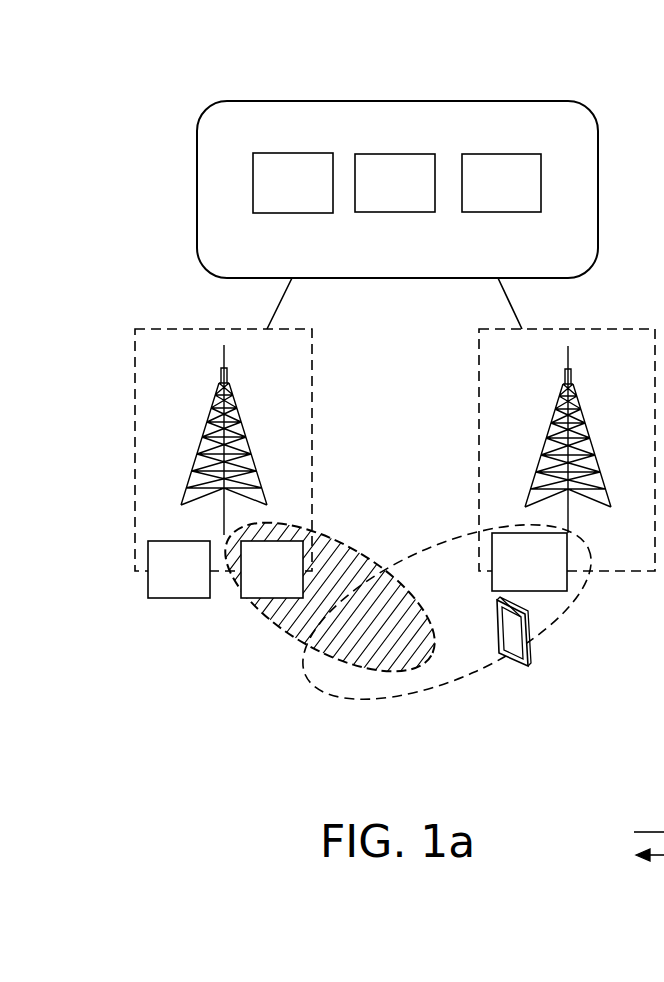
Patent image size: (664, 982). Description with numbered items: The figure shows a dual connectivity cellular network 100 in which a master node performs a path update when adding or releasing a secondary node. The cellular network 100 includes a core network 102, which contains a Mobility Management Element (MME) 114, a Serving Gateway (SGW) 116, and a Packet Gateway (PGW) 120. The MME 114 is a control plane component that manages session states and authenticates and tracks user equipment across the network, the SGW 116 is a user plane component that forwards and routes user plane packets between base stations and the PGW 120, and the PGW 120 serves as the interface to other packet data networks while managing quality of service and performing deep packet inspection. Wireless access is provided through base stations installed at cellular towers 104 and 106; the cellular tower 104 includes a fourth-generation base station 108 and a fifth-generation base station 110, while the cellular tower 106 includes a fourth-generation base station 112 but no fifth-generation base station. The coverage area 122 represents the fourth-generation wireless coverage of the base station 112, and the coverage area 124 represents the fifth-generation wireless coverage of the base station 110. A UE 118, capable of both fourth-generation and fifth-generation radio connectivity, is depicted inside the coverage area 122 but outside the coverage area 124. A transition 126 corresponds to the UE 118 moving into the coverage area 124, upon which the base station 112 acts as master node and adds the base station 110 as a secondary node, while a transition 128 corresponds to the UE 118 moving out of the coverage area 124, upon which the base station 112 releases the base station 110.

The dual connectivity cellular network 100 is at (183, 82).
The core network 102 is at (297, 100).
The cellular tower 104 is at (180, 328).
The cellular tower 106 is at (612, 327).
The 4G base station 108 is at (163, 598).
The 5G base station 110 is at (270, 598).
The 4G base station 112 is at (567, 577).
The Mobility Management Element (MME) 114 is at (292, 213).
The Serving Gateway (SGW) 116 is at (395, 212).
The UE 118 is at (528, 650).
The Packet Gateway (PGW) 120 is at (500, 212).
The coverage area 122 is at (472, 687).
The coverage area 124 is at (355, 548).
The transition 126 is at (663, 818).
The transition 128 is at (663, 877).